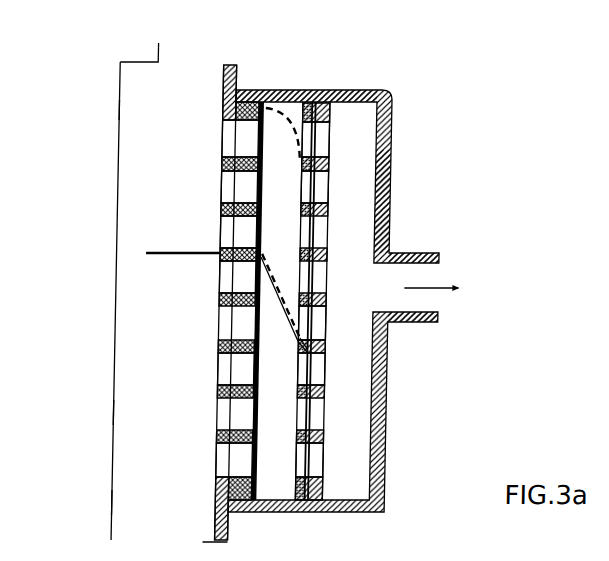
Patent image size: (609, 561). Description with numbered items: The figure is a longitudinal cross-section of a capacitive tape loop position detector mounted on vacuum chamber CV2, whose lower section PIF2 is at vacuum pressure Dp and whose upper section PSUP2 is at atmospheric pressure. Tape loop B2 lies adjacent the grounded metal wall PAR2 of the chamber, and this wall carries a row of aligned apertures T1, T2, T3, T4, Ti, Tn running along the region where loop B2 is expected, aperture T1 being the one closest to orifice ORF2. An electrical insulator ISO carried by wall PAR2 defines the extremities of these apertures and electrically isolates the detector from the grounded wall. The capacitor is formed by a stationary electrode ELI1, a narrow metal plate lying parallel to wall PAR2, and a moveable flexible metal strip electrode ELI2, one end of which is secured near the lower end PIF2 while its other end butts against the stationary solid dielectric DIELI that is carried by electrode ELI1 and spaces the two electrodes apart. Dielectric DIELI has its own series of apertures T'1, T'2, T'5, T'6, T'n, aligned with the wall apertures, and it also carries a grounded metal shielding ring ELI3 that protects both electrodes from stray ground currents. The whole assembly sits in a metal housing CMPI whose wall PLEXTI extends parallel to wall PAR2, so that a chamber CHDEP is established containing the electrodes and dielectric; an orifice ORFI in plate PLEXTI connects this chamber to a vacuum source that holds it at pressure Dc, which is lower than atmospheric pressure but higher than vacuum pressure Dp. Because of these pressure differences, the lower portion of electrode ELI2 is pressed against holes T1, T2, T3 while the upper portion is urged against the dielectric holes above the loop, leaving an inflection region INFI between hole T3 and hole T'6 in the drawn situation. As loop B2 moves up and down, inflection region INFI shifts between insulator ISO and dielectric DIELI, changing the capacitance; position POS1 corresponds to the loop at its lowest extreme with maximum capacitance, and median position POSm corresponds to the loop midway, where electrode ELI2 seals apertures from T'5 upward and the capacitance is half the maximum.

The orifice ORF2 is at (158, 52).
The lower section of vacuum chamber PIF2 is at (148, 111).
The vacuum pressure Dp is at (152, 102).
The electrical insulator ISO is at (222, 108).
The aperture T1 is at (223, 141).
The aperture T2 is at (223, 186).
The aperture T3 is at (223, 233).
The aperture T4 is at (223, 278).
The aperture Ti is at (223, 365).
The aperture Tn is at (223, 460).
The tape loop B2 is at (140, 252).
The upper section of vacuum chamber PSUP2 is at (153, 413).
The vacuum chamber CV2 is at (133, 502).
The grounded metal wall PAR2 is at (237, 73).
The flexible electrode ELI2 is at (265, 158).
The housing CMPI is at (400, 126).
The housing wall PLEXTI is at (392, 184).
The chamber CHDEP is at (392, 213).
The orifice ORFI is at (408, 254).
The chamber pressure Dc is at (356, 258).
The grounded shielding ring ELI3 is at (314, 277).
The aperture in dielectric T'1 is at (337, 139).
The aperture in dielectric T'2 is at (337, 187).
The aperture in dielectric T'5 is at (334, 323).
The aperture in dielectric T'6 is at (333, 370).
The aperture in dielectric T'n is at (331, 460).
The position of inflection region POS1 is at (283, 124).
The median position POSm is at (283, 262).
The inflection region INFI is at (281, 323).
The stationary solid dielectric DIELI is at (327, 354).
The stationary electrode ELI1 is at (314, 469).